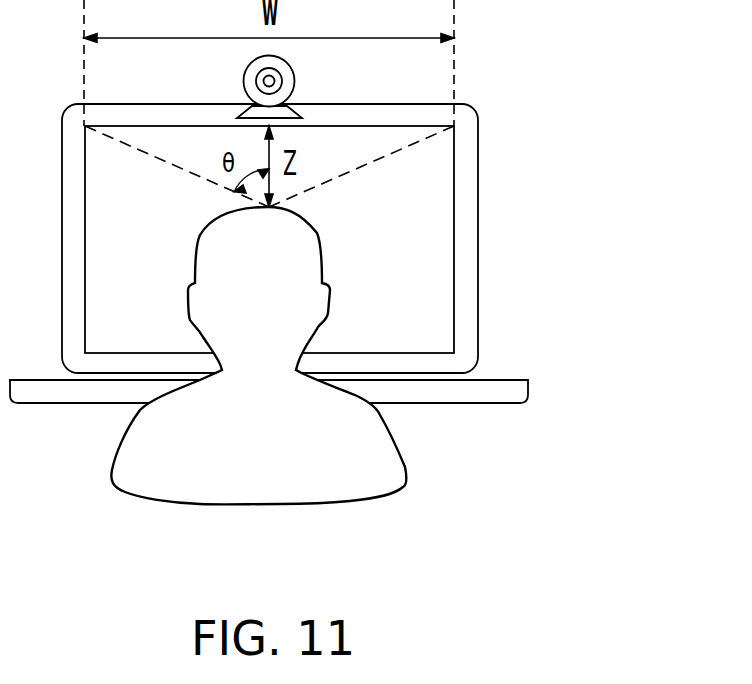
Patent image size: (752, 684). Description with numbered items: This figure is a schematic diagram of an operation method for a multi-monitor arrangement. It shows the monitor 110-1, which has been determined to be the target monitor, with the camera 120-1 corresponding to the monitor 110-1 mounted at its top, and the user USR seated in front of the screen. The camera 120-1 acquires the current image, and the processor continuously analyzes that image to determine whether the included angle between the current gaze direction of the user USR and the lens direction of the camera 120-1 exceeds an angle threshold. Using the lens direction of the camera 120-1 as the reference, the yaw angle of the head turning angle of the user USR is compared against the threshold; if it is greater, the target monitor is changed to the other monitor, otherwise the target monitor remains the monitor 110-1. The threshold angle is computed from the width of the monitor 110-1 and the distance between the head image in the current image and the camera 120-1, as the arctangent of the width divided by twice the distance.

The monitor 110-1 is at (479, 238).
The camera 120-1 is at (294, 82).
The user USR is at (380, 472).